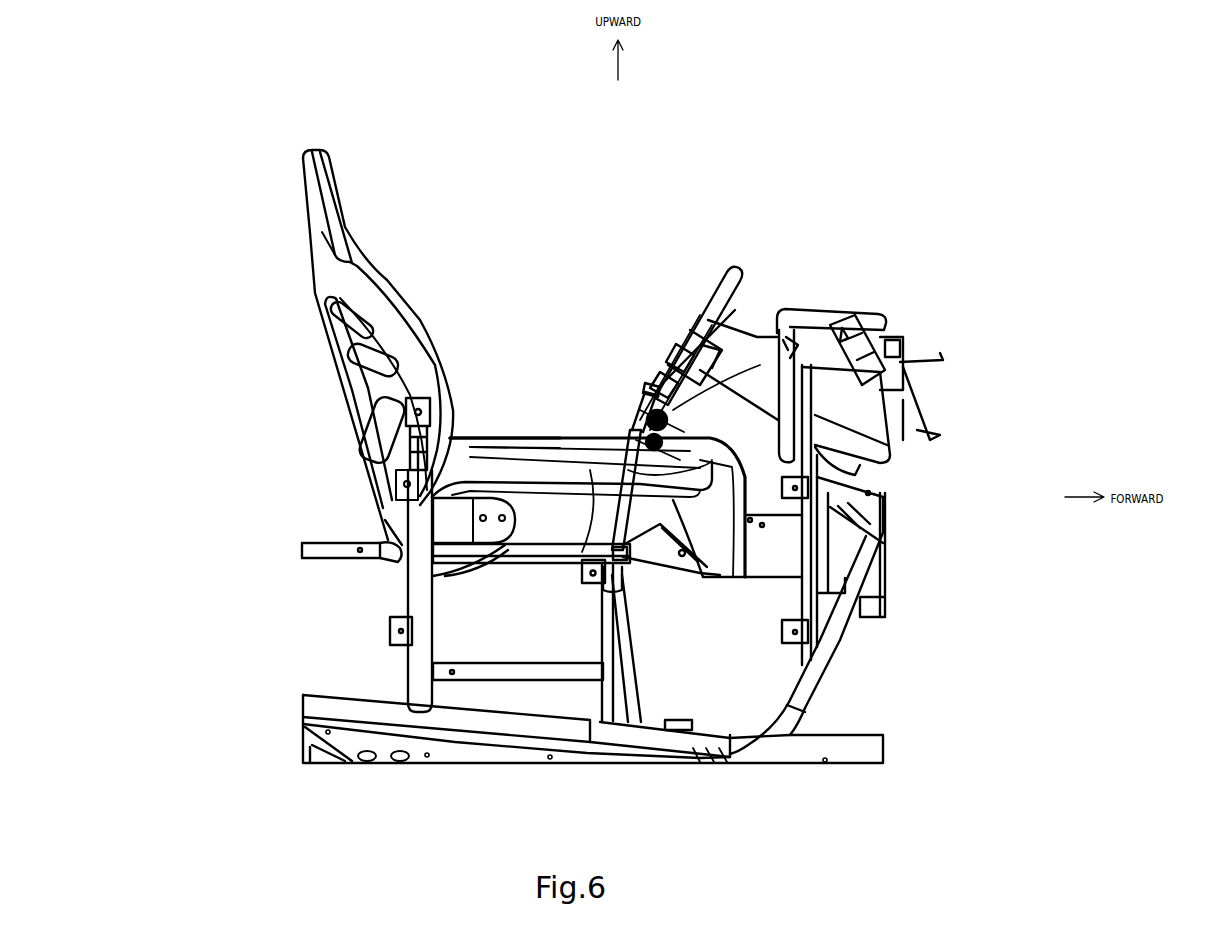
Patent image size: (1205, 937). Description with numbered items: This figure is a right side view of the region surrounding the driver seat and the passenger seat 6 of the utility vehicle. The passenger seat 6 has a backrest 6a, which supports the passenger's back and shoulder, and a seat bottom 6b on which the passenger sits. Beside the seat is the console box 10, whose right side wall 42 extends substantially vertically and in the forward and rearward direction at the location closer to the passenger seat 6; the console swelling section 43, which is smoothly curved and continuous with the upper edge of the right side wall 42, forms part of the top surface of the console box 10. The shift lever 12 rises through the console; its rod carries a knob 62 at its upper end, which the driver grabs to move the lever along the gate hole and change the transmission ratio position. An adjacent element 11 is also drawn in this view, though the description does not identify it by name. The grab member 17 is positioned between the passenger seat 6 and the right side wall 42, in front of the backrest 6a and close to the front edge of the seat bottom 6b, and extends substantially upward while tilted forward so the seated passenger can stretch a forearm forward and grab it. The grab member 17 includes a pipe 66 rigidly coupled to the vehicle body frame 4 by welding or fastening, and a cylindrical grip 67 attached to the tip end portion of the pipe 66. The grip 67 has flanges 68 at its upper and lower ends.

The vehicle body frame 4 is at (697, 742).
The passenger seat 6 is at (305, 150).
The backrest 6a is at (325, 233).
The seat bottom 6b is at (540, 535).
The console box 10 is at (560, 420).
The steering column 11 is at (733, 265).
The shift lever 12 is at (700, 445).
The grab member 17 is at (657, 447).
The right side wall 42 is at (500, 456).
The console swelling section 43 is at (471, 435).
The knob 62 is at (733, 345).
The pipe 66 is at (590, 470).
The grip 67 is at (636, 415).
The flanges 68 is at (640, 437).